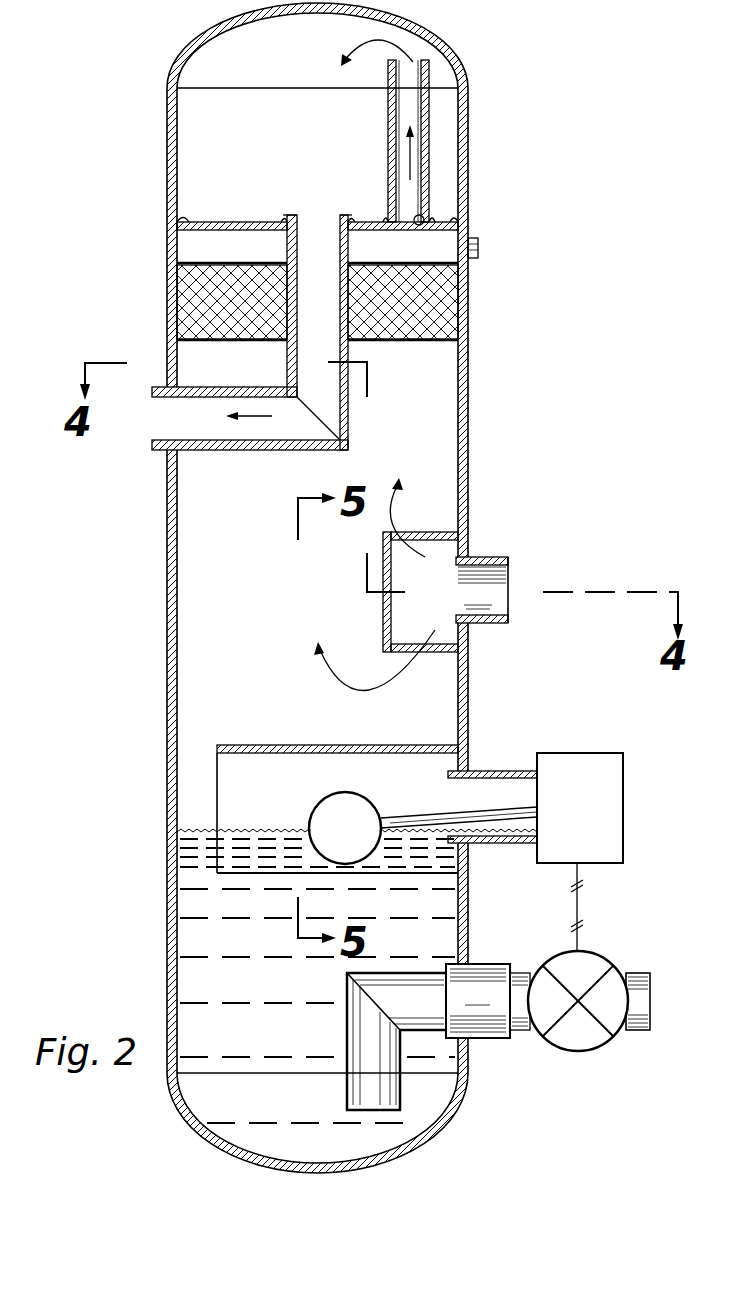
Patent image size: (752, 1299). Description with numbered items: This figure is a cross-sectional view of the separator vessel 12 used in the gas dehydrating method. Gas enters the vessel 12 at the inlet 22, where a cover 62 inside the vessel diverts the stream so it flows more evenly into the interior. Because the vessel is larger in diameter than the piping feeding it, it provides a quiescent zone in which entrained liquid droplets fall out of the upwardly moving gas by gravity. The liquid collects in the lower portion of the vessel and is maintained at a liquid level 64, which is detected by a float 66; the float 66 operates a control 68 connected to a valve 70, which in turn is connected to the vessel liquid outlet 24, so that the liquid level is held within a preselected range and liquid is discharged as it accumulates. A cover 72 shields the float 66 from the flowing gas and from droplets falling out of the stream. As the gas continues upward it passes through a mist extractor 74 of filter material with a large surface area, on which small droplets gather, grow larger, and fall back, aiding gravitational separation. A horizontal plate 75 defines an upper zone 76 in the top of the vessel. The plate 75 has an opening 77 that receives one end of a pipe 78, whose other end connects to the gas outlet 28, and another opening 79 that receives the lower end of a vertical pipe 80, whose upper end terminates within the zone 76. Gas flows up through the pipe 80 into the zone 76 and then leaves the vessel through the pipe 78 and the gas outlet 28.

The separator vessel 12 is at (468, 434).
The inlet 22 is at (474, 557).
The vessel liquid outlet 24 is at (473, 978).
The gas outlet 28 is at (160, 450).
The cover 62 is at (383, 625).
The liquid level 64 is at (198, 831).
The float 66 is at (357, 800).
The control 68 is at (607, 797).
The valve 70 is at (590, 963).
The cover 72 is at (283, 745).
The mist extractor 74 is at (452, 294).
The horizontal plate 75 is at (243, 221).
The upper zone 76 is at (284, 151).
The opening 77 is at (296, 216).
The pipe 78 is at (288, 248).
The opening 79 is at (424, 219).
The vertical pipe 80 is at (430, 135).